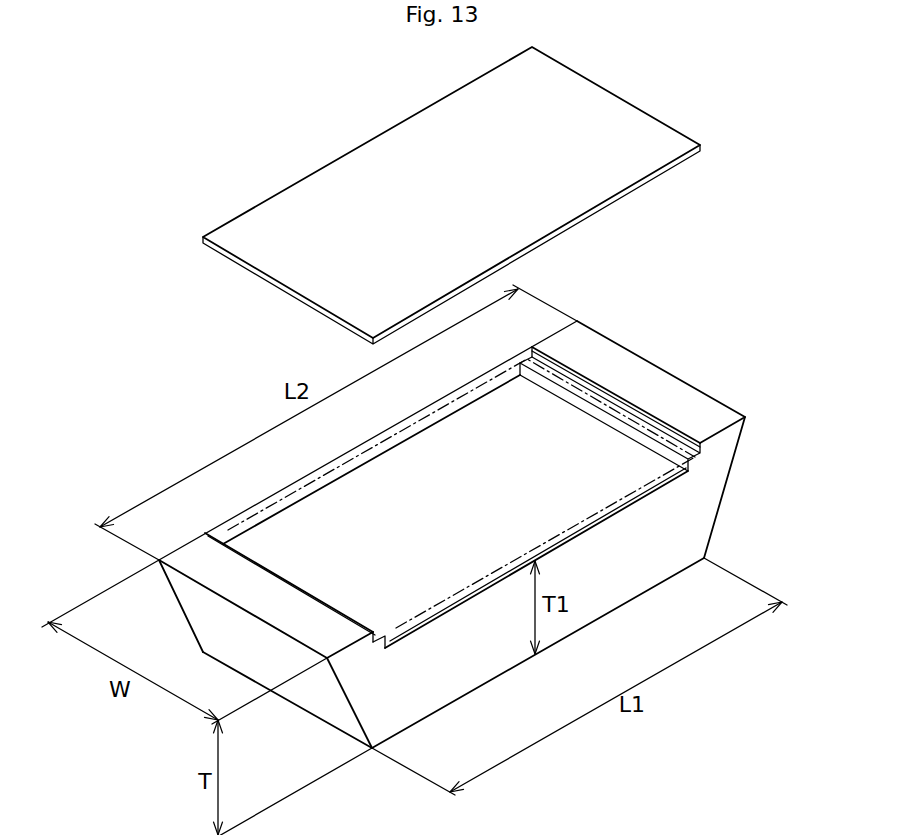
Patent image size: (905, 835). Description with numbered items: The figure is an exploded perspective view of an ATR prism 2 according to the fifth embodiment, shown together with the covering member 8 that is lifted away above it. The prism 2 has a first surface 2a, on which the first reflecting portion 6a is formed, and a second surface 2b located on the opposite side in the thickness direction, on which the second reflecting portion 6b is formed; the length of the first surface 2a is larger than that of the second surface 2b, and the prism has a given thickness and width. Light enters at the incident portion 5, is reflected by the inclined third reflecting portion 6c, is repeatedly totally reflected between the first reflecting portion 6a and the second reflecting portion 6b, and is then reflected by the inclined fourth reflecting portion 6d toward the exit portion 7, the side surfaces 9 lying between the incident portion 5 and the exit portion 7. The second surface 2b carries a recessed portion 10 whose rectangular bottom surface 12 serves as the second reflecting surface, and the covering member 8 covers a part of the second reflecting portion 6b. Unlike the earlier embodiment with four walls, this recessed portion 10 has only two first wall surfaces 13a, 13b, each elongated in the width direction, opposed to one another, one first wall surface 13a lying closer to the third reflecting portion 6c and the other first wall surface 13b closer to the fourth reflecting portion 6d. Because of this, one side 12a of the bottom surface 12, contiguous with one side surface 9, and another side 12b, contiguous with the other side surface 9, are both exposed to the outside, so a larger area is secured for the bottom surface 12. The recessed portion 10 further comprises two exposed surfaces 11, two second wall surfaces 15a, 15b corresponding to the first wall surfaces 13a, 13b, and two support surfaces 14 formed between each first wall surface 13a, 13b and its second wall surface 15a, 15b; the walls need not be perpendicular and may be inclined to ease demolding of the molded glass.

The ATR prism 2 is at (784, 252).
The first surface 2a is at (482, 686).
The second surface 2b is at (338, 634).
The incident portion 5 is at (247, 578).
The first reflecting portion 6a is at (515, 653).
The second reflecting portion 6b is at (437, 527).
The third reflecting portion 6c is at (449, 615).
The fourth reflecting portion 6d is at (717, 524).
The exit portion 7 is at (616, 366).
The covering member 8 is at (315, 170).
The side surface 9 is at (187, 622).
The recessed portion 10 is at (626, 466).
The exposed surface 11 is at (215, 574).
The bottom surface 12 is at (604, 436).
The one side 12a is at (601, 522).
The another side 12b is at (385, 452).
The first wall surface 13a is at (392, 643).
The first wall surface 13b is at (586, 405).
The support surface 14 is at (378, 631).
The second wall surface 15a is at (304, 587).
The second wall surface 15b is at (546, 363).